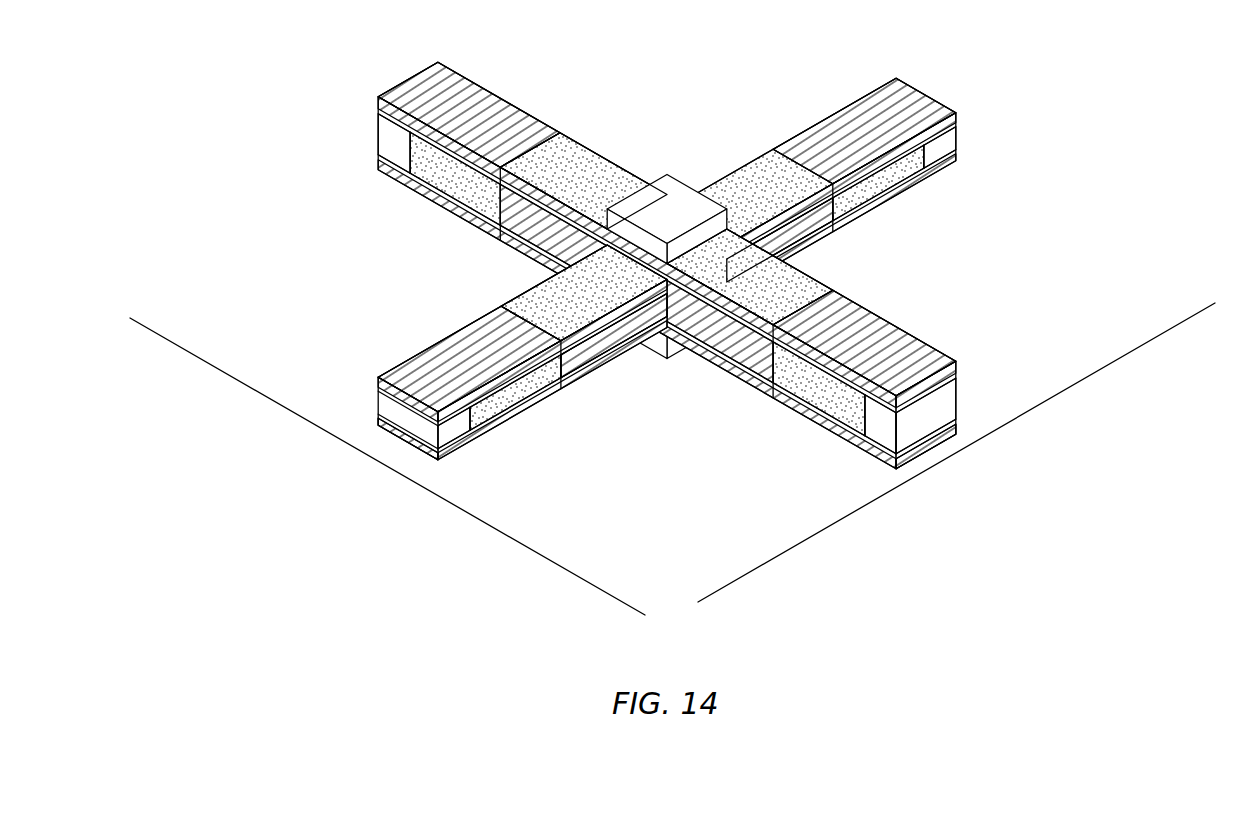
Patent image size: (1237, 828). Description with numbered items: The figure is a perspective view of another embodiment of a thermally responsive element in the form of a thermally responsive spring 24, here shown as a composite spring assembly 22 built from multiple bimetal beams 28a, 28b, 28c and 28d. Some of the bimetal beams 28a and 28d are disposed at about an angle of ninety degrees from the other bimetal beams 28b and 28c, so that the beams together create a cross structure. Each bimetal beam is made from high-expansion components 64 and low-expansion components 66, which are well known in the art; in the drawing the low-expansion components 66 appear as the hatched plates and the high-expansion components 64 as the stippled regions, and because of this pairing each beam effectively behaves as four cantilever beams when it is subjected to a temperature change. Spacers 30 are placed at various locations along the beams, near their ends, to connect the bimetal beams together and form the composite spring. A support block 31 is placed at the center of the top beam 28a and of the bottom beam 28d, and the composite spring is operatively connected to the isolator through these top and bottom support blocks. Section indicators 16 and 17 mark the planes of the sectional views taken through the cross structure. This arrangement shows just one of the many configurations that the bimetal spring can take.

The section line 16- 16 is at (725, 592).
The section line 17- 17 is at (608, 600).
The cross-shaped panel assembly 22 is at (667, 293).
The thermally responsive spring 24 is at (801, 123).
The bimetal beam 28a is at (910, 392).
The bimetal beam 28b is at (908, 140).
The bimetal beam 28c is at (422, 445).
The bimetal beam 28d is at (917, 455).
The spacer 30 is at (388, 134).
The support block 31 is at (678, 205).
The high-expansion component 64 is at (378, 110).
The low-expansion component 66 is at (502, 110).